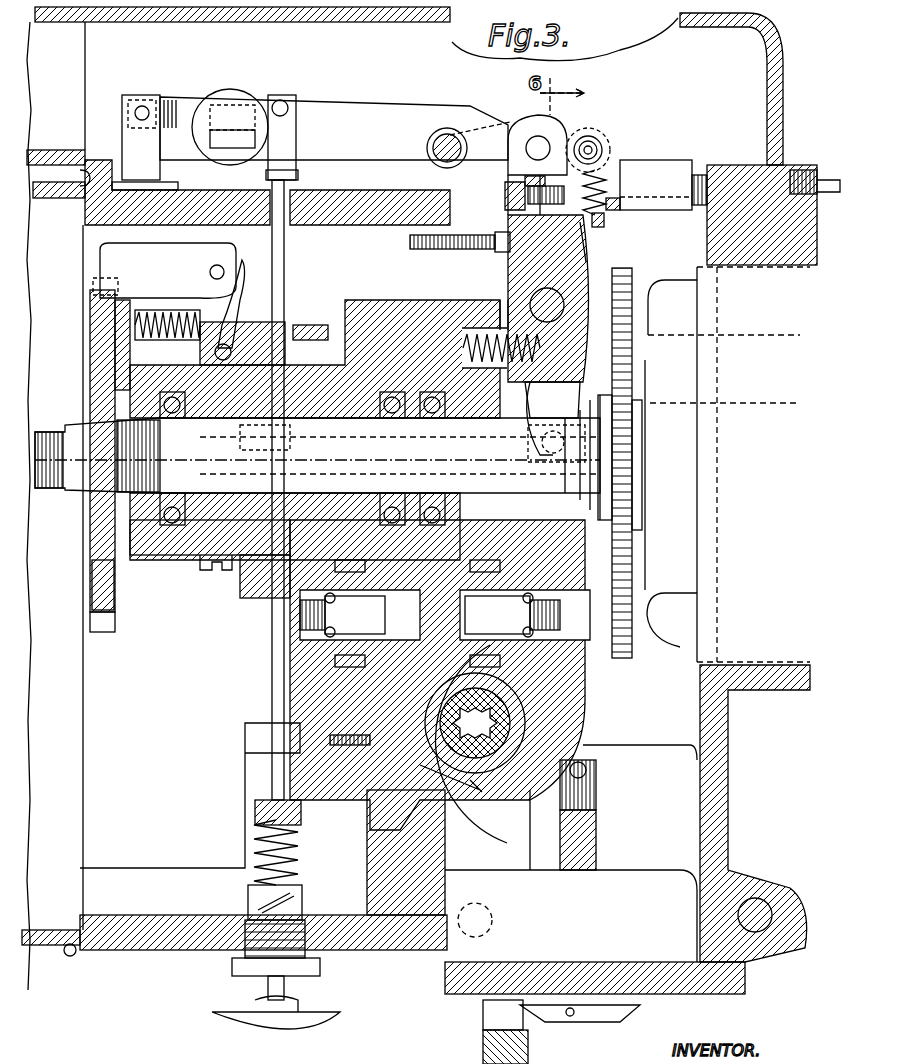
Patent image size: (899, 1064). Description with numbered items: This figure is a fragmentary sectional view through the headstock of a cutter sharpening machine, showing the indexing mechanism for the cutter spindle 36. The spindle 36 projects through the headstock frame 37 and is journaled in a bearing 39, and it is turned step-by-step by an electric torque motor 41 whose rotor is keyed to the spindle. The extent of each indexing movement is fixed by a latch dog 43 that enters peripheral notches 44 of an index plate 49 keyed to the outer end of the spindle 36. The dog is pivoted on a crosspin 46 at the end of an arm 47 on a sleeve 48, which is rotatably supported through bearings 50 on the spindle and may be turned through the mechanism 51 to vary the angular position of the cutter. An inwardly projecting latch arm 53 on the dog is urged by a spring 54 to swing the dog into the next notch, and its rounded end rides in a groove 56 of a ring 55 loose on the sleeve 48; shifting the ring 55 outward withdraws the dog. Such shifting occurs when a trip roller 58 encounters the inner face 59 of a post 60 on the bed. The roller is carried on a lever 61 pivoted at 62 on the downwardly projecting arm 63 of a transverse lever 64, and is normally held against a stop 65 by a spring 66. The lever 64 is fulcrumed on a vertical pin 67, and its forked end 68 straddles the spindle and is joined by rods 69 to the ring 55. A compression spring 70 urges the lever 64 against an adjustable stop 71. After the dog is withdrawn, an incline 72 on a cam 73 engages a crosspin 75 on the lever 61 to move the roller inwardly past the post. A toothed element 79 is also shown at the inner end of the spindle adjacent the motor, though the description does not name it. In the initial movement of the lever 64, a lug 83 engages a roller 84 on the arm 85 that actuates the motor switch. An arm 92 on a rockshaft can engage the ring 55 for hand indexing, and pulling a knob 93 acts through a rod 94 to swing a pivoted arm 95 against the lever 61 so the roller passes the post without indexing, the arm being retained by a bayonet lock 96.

The spindle 36 is at (568, 495).
The headstock frame 37 is at (753, 162).
The bearing 39 is at (432, 413).
The electric torque motor 41 is at (684, 642).
The latch dog 43 is at (110, 262).
The peripheral notches 44 is at (97, 300).
The crosspin 46 is at (226, 272).
The arm 47 is at (128, 348).
The sleeve 48 is at (186, 540).
The index plate 49 is at (106, 578).
The bearings 50 is at (172, 413).
The mechanism 51 is at (406, 763).
The latch arm 53 is at (230, 312).
The spring 54 is at (135, 325).
The ring 55 is at (246, 598).
The groove 56 is at (216, 574).
The trip roller 58 is at (427, 148).
The inner face 59 is at (262, 135).
The post 60 is at (212, 140).
The lever 61 is at (502, 132).
The pivot 62 is at (540, 145).
The downwardly projecting arm 63 is at (572, 140).
The lever 64 is at (584, 256).
The stop 65 is at (598, 138).
The spring 66 is at (606, 188).
The vertical pin 67 is at (564, 305).
The forked end 68 is at (572, 398).
The rods 69 is at (510, 448).
The compression spring 70 is at (504, 330).
The stop 71 is at (497, 235).
The incline 72 is at (626, 164).
The cam 73 is at (700, 170).
The crosspin 75 is at (608, 140).
The gear 79 is at (626, 274).
The lug 83 is at (512, 203).
The roller 84 is at (520, 180).
The arm 85 is at (584, 242).
The arm 92 is at (318, 328).
The knob 93 is at (310, 1022).
The rod 94 is at (272, 672).
The pivoted arm 95 is at (356, 113).
The bayonet lock 96 is at (258, 901).